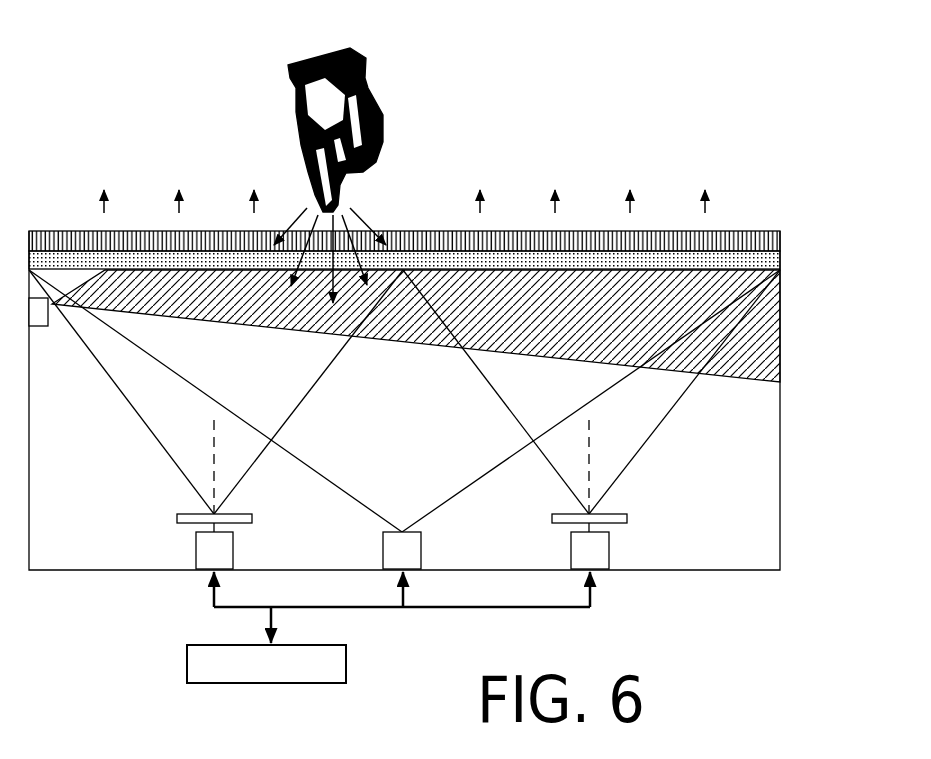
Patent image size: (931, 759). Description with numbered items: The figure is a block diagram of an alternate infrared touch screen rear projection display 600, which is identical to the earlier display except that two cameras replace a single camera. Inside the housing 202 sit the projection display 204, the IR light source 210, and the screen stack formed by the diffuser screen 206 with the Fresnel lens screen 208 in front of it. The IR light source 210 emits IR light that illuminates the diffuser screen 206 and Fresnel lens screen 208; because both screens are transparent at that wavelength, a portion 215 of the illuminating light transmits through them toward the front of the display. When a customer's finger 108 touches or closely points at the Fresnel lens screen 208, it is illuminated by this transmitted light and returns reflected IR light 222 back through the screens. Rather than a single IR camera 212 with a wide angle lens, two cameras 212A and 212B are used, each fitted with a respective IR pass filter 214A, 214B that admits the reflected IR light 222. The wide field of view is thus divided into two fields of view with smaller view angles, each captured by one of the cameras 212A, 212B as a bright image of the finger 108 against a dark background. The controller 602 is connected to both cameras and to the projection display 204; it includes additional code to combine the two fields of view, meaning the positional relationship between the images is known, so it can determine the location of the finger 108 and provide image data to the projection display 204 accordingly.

The touch screen display 600 is at (138, 79).
The finger 108 is at (362, 85).
The reflected IR light 222 is at (365, 220).
The portion of illuminating IR light 215 is at (706, 205).
The Fresnel lens screen 208 is at (780, 231).
The diffuser screen 206 is at (780, 269).
The housing 202 is at (781, 532).
The IR light source 210 is at (40, 327).
The IR camera 212 is at (450, 340).
The IR pass filter 214A is at (177, 517).
The IR pass filter 214B is at (627, 516).
The camera 212A is at (196, 557).
The camera 212B is at (609, 554).
The projection display 204 is at (383, 557).
The controller 602 is at (187, 657).